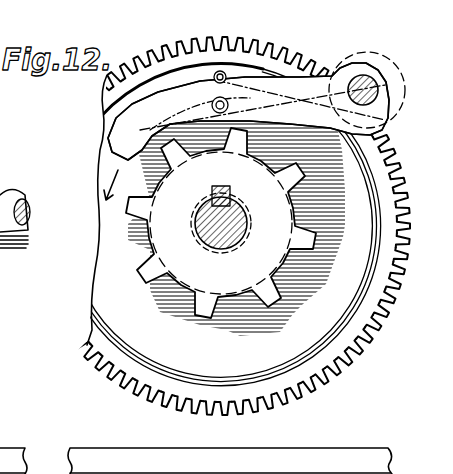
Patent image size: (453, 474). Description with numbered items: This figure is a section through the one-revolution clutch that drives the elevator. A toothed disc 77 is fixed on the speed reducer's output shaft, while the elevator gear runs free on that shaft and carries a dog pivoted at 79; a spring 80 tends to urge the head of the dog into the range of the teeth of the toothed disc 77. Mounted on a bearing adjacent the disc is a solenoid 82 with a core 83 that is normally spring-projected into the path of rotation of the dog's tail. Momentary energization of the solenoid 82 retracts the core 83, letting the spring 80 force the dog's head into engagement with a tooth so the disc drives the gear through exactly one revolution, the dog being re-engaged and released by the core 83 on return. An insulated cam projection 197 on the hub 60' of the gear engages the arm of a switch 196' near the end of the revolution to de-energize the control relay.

The hub 60' is at (221, 247).
The toothed disc 77 is at (148, 263).
The pivot 79 is at (228, 103).
The spring 80 is at (213, 78).
The solenoid 82 is at (368, 58).
The core 83 is at (383, 85).
The pitch circle 196' is at (206, 178).
The cam projection 197 is at (239, 320).